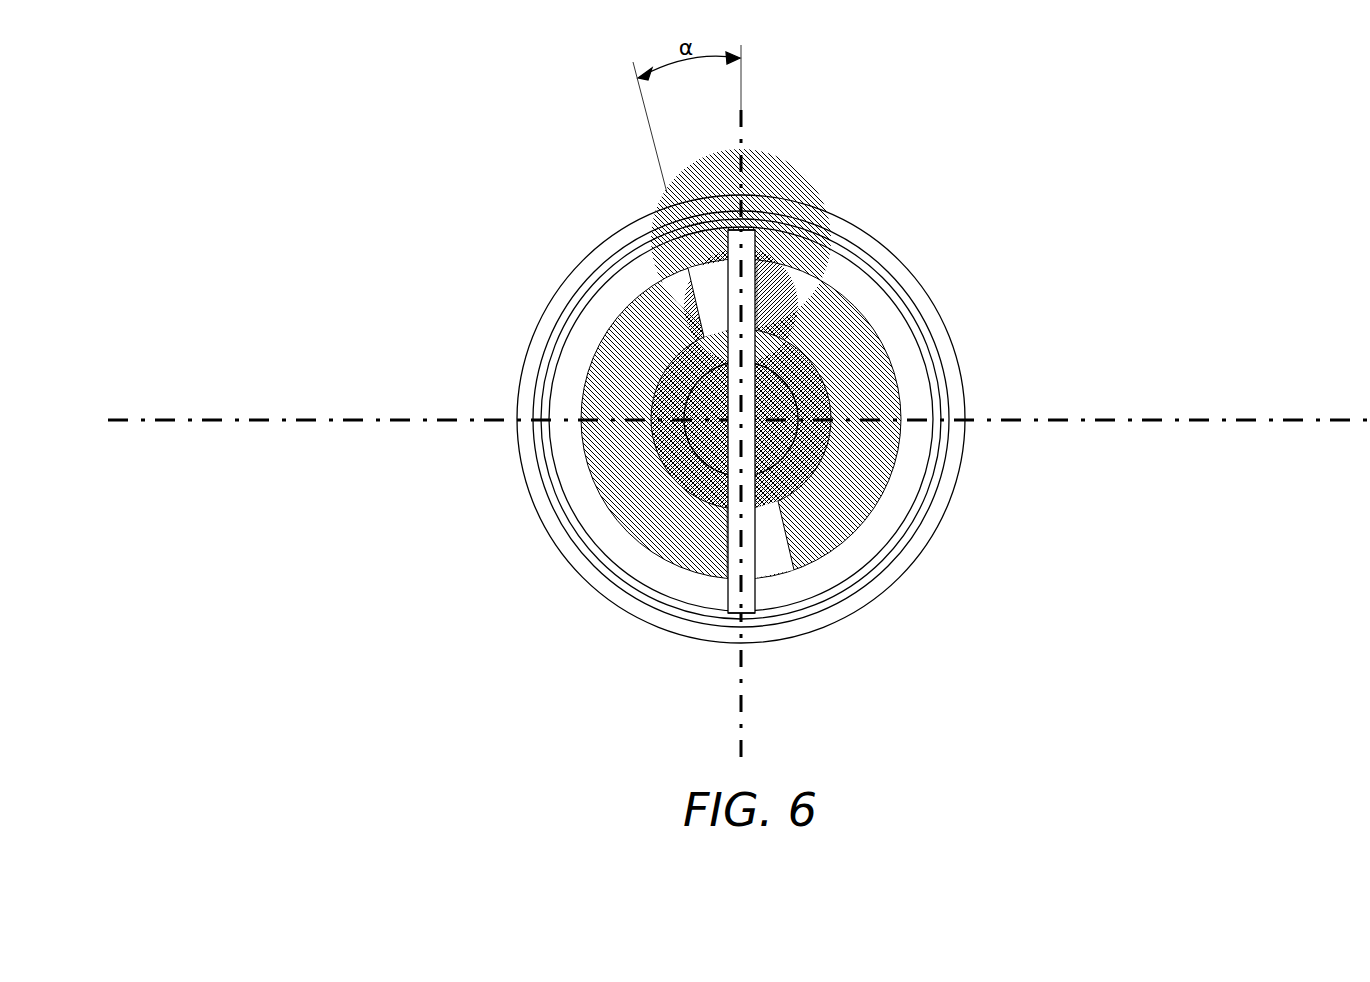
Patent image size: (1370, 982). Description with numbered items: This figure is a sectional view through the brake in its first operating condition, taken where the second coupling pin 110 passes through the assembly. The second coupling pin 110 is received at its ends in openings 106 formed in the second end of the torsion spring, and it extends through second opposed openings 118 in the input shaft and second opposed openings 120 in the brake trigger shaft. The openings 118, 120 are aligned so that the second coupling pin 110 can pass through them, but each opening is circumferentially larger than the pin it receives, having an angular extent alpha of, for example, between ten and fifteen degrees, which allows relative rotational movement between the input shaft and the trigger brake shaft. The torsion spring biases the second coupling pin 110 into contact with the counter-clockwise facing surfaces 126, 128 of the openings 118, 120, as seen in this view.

The openings 106 is at (762, 238).
The second coupling pin 110 is at (750, 232).
The second opposed openings 118 is at (718, 350).
The second opposed openings 120 is at (710, 272).
The counter-clockwise facing surface 126 is at (757, 344).
The counter-clockwise facing surface 128 is at (762, 297).